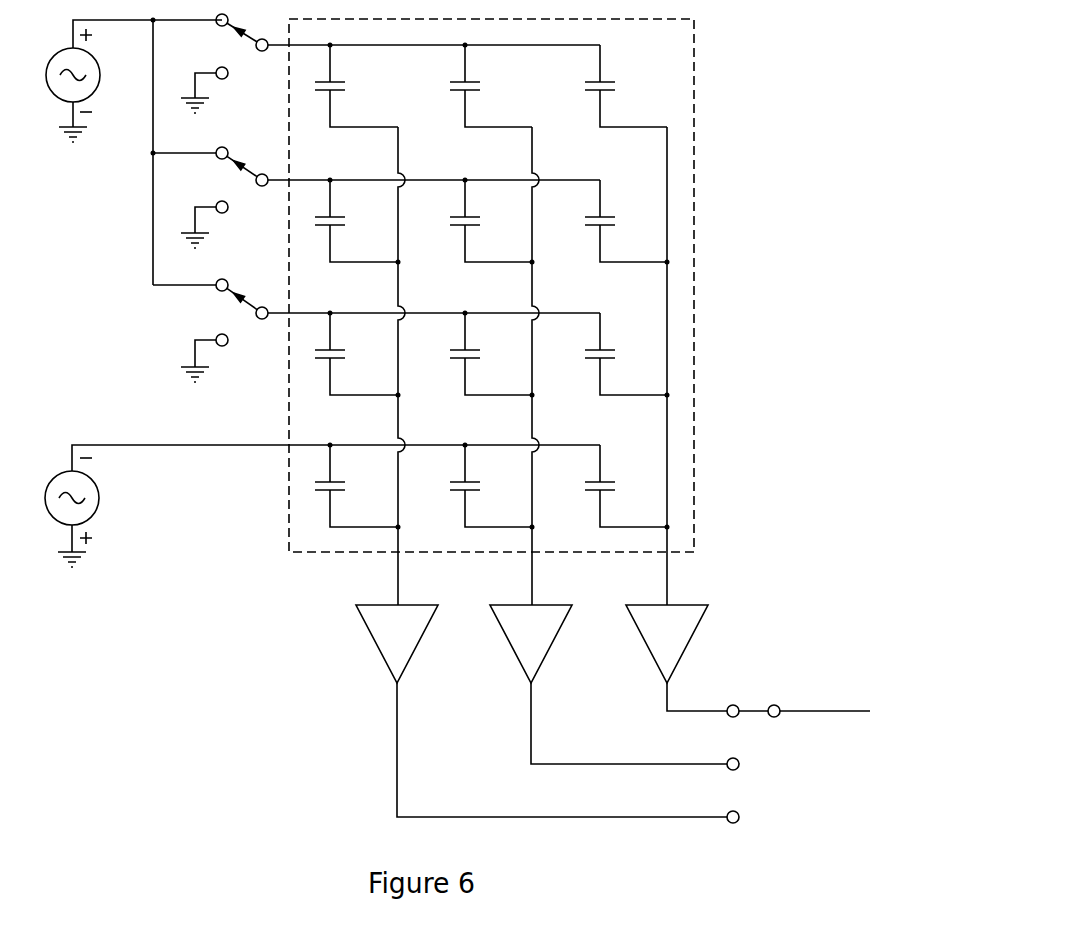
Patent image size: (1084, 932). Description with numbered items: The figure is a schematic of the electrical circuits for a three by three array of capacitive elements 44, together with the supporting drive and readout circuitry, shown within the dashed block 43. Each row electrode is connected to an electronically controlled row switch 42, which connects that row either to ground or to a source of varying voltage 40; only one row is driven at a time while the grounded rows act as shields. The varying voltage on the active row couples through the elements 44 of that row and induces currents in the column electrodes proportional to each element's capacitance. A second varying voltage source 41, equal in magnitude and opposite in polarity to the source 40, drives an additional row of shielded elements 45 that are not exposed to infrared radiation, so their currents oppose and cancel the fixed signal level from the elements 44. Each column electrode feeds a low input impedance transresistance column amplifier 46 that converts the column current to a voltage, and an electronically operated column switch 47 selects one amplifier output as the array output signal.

The source of varying voltage 40 is at (125, 81).
The second varying voltage source 41 is at (315, 506).
The row switch 42 is at (224, 198).
The capacitor array 43 is at (491, 285).
The array elements 44 is at (492, 221).
The shielded elements 45 is at (492, 487).
The column amplifier 46 is at (539, 644).
The column switch 47 is at (768, 718).